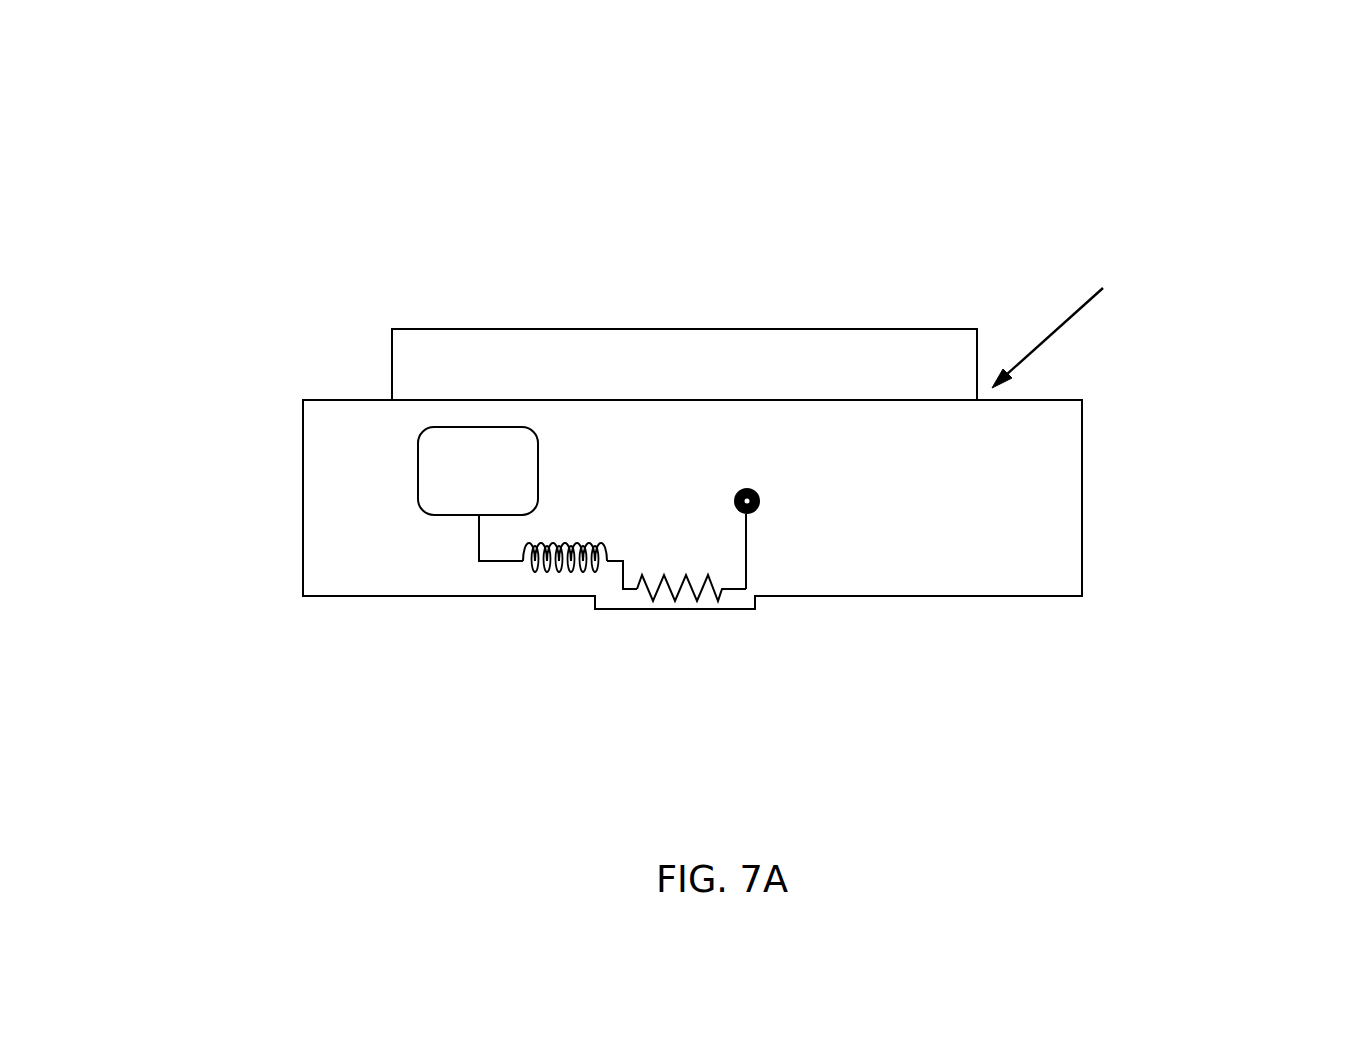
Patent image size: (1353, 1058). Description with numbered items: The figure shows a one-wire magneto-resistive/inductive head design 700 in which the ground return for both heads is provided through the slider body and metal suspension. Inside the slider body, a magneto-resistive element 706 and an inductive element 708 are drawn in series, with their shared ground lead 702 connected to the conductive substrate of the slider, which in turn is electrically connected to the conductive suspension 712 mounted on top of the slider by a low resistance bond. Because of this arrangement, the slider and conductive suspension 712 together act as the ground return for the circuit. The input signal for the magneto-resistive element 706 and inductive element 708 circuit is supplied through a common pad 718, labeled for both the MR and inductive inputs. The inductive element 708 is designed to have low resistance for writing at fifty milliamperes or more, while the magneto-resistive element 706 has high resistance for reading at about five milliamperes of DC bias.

The one-wire magneto-resistive/inductive head design 700 is at (928, 217).
The ground lead 702 is at (757, 507).
The magneto-resistive element 706 is at (662, 605).
The inductive element 708 is at (525, 577).
The conductive suspension 712 is at (943, 328).
The common pad 718 is at (435, 443).